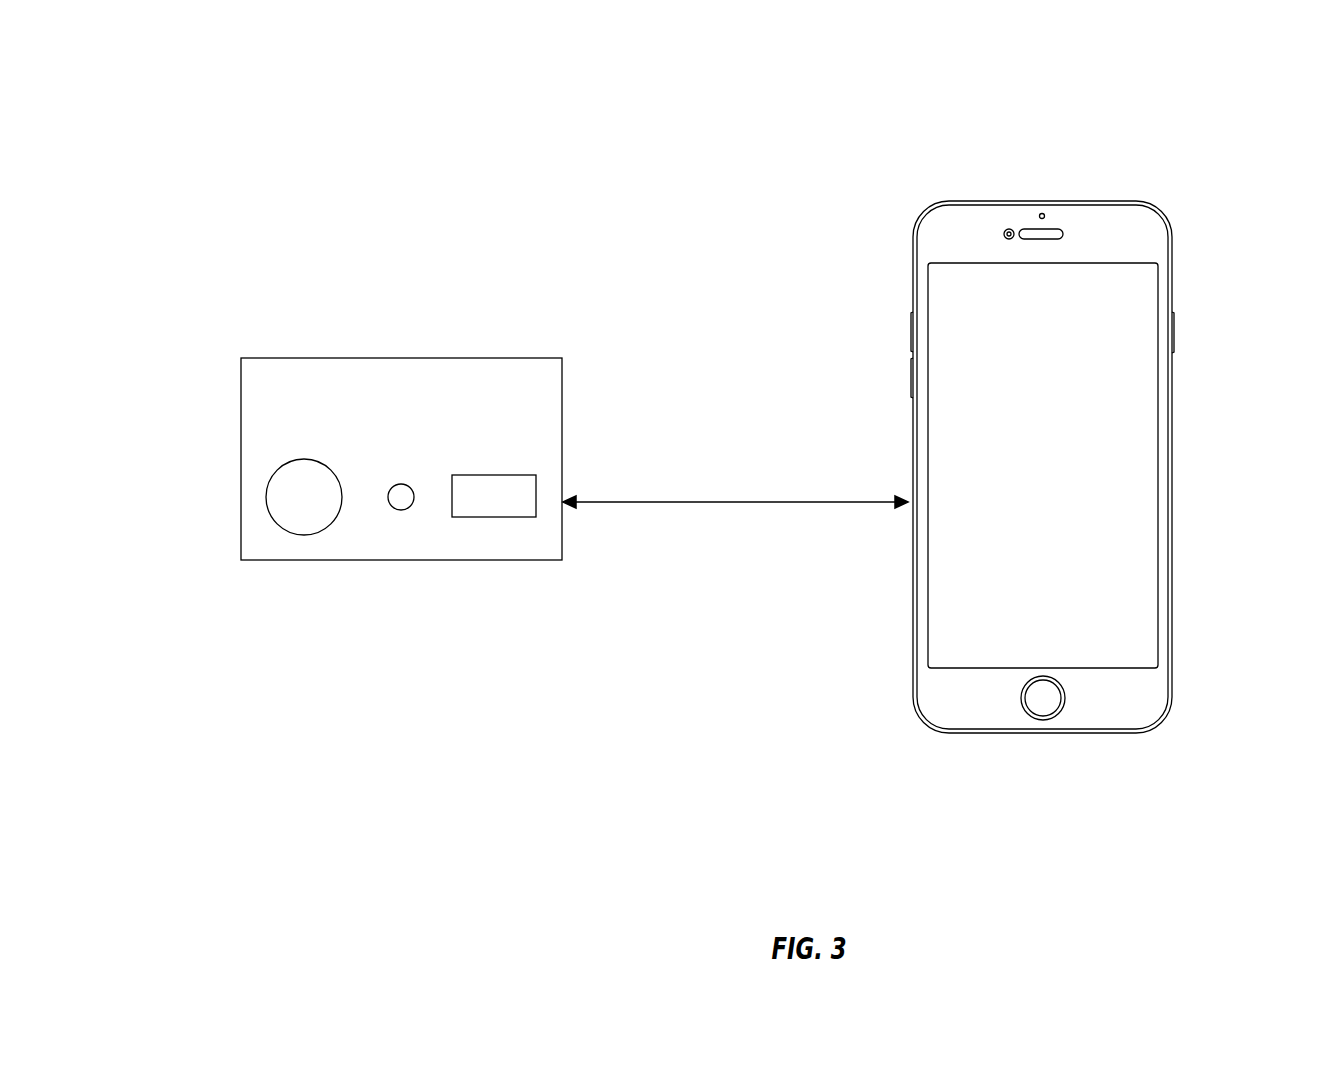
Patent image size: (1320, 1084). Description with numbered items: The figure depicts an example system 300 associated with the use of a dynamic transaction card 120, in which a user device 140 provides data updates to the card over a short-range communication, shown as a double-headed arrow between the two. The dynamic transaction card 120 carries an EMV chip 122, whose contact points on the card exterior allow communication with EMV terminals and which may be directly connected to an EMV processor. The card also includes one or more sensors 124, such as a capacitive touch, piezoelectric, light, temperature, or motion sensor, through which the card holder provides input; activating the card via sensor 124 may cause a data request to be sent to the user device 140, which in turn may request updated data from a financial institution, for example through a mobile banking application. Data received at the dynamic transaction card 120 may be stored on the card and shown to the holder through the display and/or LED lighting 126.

The system 300 is at (183, 69).
The dynamic transaction card 120 is at (430, 501).
The EMV chip 122 is at (523, 493).
The sensor 124 is at (398, 502).
The display and/or LED lighting 126 is at (292, 518).
The user device 140 is at (1175, 417).